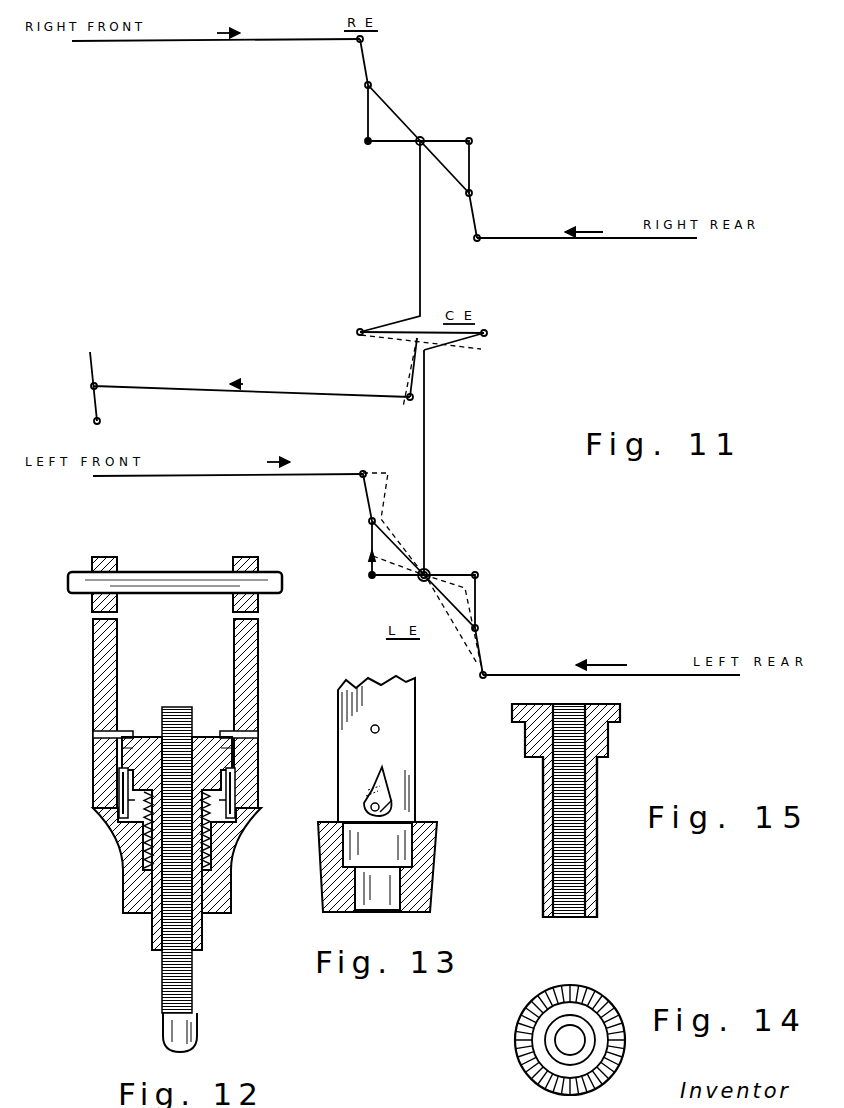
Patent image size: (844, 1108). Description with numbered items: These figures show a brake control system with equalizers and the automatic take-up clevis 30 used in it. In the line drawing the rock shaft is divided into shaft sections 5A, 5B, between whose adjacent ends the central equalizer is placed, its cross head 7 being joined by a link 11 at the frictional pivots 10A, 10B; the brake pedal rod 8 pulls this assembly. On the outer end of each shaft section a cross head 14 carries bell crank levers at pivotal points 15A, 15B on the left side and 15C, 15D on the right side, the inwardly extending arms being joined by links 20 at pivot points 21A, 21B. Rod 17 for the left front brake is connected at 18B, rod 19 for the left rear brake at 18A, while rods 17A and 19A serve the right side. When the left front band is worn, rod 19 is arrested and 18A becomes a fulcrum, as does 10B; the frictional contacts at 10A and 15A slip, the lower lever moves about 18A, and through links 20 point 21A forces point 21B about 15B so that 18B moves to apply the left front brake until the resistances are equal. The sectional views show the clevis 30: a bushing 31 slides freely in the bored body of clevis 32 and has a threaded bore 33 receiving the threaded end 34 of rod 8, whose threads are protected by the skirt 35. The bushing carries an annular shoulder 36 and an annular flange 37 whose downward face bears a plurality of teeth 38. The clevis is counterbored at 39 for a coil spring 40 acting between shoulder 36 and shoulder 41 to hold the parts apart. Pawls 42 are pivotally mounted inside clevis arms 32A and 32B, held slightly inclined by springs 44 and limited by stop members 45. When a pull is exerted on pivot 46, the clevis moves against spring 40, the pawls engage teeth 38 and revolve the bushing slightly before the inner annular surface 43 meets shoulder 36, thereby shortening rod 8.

In FIG. 11, the shaft section 5A is at (427, 462).
In FIG. 11, the shaft section 5B is at (420, 247).
In FIG. 11, the cross head 7 is at (460, 333).
In FIG. 12, the brake pedal rod 8 is at (173, 1032).
In FIG. 11, the pivot point 10A is at (487, 335).
In FIG. 11, the pivot point 10B is at (358, 331).
In FIG. 11, the link 11 is at (392, 310).
In FIG. 11, the cross head 14 is at (462, 625).
In FIG. 11, the pivotal point 15A is at (478, 629).
In FIG. 11, the pivotal point 15B is at (368, 522).
In FIG. 11, the pivotal point 15C is at (366, 87).
In FIG. 11, the pivotal point 15D is at (472, 193).
In FIG. 11, the rod 17 is at (239, 478).
In FIG. 11, the rod 17A is at (184, 44).
In FIG. 11, the connection point 18A is at (487, 675).
In FIG. 11, the connection point 18B is at (365, 472).
In FIG. 11, the rod 19 is at (675, 677).
In FIG. 11, the rod 19A is at (606, 238).
In FIG. 11, the links 20 is at (390, 567).
In FIG. 11, the pivot point 21A is at (478, 573).
In FIG. 11, the pivot point 21B is at (368, 578).
In FIG. 12, the automatic take-up clevis 30 is at (77, 667).
In FIG. 12, the bushing 31 is at (200, 735).
In FIG. 15, the bushing 31 is at (608, 740).
In FIG. 14, the bushing 31 is at (540, 988).
In FIG. 12, the clevis 32 is at (103, 838).
In FIG. 13, the clevis 32 is at (417, 880).
In FIG. 12, the clevis arm 32A is at (112, 678).
In FIG. 13, the clevis arm 32A is at (376, 749).
In FIG. 12, the clevis arm 32B is at (240, 663).
In FIG. 15, the threaded bore 33 is at (573, 872).
In FIG. 12, the threaded end 34 is at (185, 988).
In FIG. 15, the skirt 35 is at (543, 837).
In FIG. 14, the skirt 35 is at (552, 1047).
In FIG. 12, the annular shoulder 36 is at (115, 800).
In FIG. 15, the annular shoulder 36 is at (602, 760).
In FIG. 14, the annular shoulder 36 is at (603, 1050).
In FIG. 15, the annular flange 37 is at (622, 713).
In FIG. 12, the teeth 38 is at (240, 760).
In FIG. 15, the teeth 38 is at (617, 723).
In FIG. 14, the teeth 38 is at (610, 1000).
In FIG. 12, the counterbore 39 is at (143, 857).
In FIG. 12, the coil spring 40 is at (207, 837).
In FIG. 12, the shoulder 41 is at (207, 870).
In FIG. 13, the shoulder 41 is at (403, 873).
In FIG. 12, the pawls 42 is at (115, 778).
In FIG. 13, the pawls 42 is at (375, 776).
In FIG. 12, the inner annular surface 43 is at (110, 825).
In FIG. 13, the inner annular surface 43 is at (413, 822).
In FIG. 13, the spring 44 is at (393, 813).
In FIG. 12, the stop members 45 is at (122, 732).
In FIG. 13, the stop members 45 is at (380, 729).
In FIG. 12, the pivot 46 is at (158, 573).